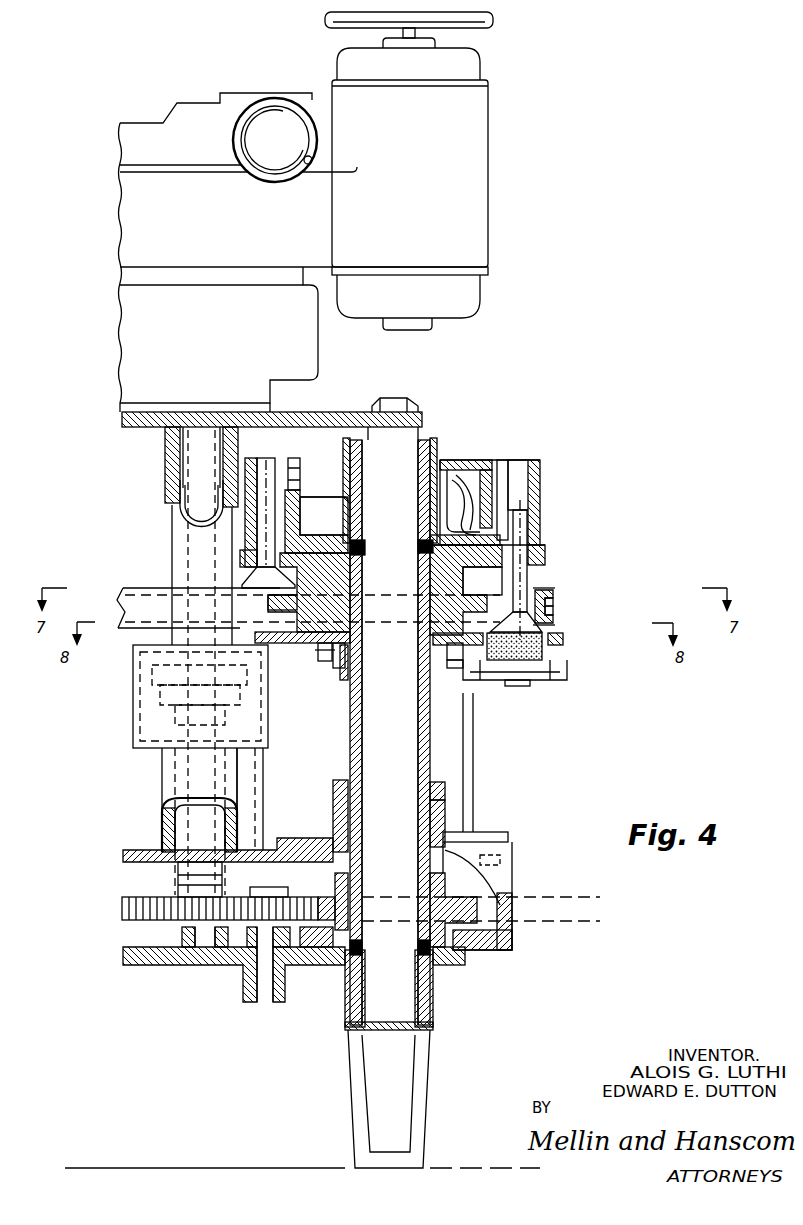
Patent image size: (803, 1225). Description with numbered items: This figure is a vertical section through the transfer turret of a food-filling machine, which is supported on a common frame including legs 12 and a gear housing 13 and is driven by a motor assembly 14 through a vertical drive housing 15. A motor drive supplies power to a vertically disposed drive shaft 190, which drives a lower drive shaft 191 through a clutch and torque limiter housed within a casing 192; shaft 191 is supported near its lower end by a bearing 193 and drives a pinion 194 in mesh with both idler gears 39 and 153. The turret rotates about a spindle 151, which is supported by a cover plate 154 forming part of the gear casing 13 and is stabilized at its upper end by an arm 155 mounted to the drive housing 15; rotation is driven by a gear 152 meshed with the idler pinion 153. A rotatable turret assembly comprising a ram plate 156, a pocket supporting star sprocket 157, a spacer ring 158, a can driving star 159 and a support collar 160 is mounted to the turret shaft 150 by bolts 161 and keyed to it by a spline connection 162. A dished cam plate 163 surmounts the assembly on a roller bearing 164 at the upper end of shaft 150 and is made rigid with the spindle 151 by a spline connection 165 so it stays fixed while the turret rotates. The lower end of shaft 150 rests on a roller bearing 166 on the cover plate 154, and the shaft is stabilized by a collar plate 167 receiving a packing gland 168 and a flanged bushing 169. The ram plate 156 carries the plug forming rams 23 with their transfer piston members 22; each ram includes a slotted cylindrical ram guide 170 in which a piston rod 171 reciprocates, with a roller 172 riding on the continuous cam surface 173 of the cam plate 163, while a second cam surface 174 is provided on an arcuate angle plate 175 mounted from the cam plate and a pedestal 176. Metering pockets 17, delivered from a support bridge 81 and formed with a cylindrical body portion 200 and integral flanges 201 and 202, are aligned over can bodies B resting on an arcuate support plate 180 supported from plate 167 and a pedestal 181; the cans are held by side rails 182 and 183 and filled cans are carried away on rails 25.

The legs 12 is at (355, 1085).
The gear housing 13 is at (162, 962).
The motor assembly 14 is at (486, 163).
The vertical drive housing 15 is at (160, 471).
The metering pockets 17 is at (556, 597).
The transfer piston members 22 is at (556, 624).
The plug forming rams 23 is at (550, 539).
The rails 25 is at (520, 686).
The idler gear 39 is at (125, 910).
The support bridge 81 is at (145, 590).
The turret shaft 150 is at (349, 720).
The spindle 151 is at (397, 767).
The gear 152 is at (335, 880).
The idler pinion 153 is at (292, 897).
The cover plate 154 is at (433, 993).
The arm 155 is at (350, 412).
The ram plate 156 is at (363, 571).
The pocket supporting star sprocket 157 is at (482, 581).
The spacer ring 158 is at (362, 640).
The can driving star 159 is at (283, 611).
The support collar 160 is at (336, 668).
The bolts 161 is at (318, 661).
The spline connection 162 is at (362, 670).
The dished cam plate 163 is at (336, 540).
The roller bearing 164 is at (366, 546).
The spline connection 165 is at (432, 440).
The roller bearing 166 is at (418, 946).
The collar plate 167 is at (500, 832).
The packing gland 168 is at (348, 834).
The flanged bushing 169 is at (446, 791).
The cylindrical ram guides 170 is at (540, 481).
The piston rod 171 is at (262, 458).
The roller 172 is at (296, 458).
The continuous cam surface 173 is at (304, 490).
The cam surface 174 is at (503, 475).
The arcuate angle plate 175 is at (474, 470).
The pedestal 176 is at (452, 466).
The arcuate support plate 180 is at (550, 680).
The pedestal 181 is at (474, 762).
The side rail 182 is at (465, 662).
The side rail 183 is at (564, 640).
The drive shaft 190 is at (198, 443).
The lower drive shaft 191 is at (200, 833).
The casing 192 is at (133, 692).
The bearing 193 is at (175, 874).
The pinion 194 is at (185, 902).
The cylindrical body portion 200 is at (547, 580).
The flange 201 is at (554, 601).
The flange 202 is at (554, 611).
The can bodies B is at (545, 651).